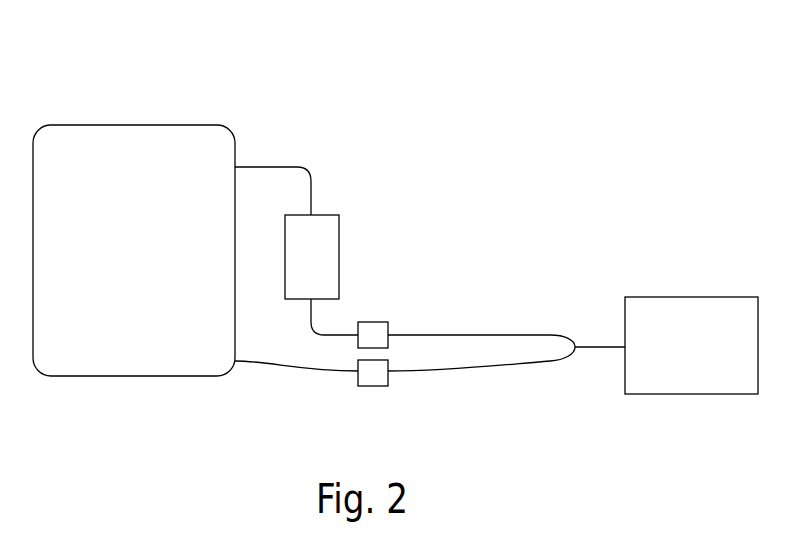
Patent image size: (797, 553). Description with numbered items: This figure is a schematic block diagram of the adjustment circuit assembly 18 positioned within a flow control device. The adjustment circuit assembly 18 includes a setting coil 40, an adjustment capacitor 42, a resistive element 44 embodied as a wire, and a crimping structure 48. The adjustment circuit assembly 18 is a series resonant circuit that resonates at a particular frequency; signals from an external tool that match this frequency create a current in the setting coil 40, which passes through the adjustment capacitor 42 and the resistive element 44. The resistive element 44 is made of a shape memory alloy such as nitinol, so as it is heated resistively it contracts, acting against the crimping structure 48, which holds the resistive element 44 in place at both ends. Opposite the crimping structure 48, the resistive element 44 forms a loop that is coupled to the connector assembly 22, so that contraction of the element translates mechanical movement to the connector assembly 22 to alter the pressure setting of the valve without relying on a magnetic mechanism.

The adjustment circuit assembly 18 is at (58, 48).
The setting coil 40 is at (90, 125).
The adjustment capacitor 42 is at (339, 240).
The resistive element 44 is at (562, 322).
The crimping structure 48 is at (373, 396).
The connector assembly 22 is at (691, 345).